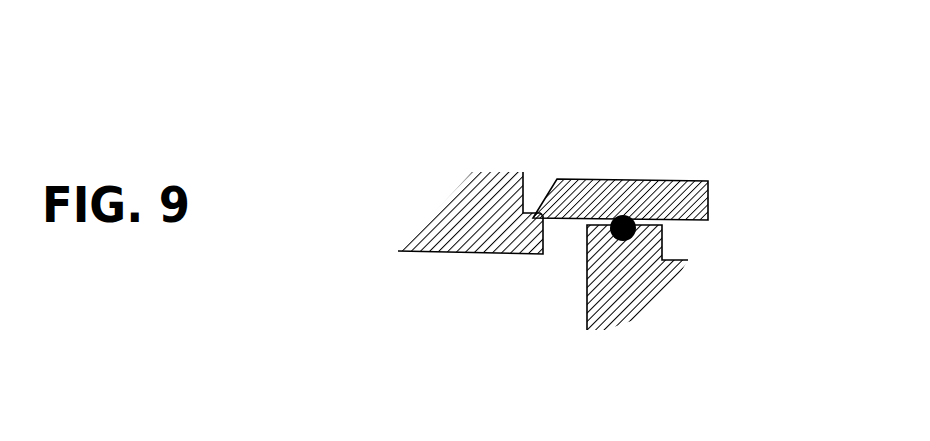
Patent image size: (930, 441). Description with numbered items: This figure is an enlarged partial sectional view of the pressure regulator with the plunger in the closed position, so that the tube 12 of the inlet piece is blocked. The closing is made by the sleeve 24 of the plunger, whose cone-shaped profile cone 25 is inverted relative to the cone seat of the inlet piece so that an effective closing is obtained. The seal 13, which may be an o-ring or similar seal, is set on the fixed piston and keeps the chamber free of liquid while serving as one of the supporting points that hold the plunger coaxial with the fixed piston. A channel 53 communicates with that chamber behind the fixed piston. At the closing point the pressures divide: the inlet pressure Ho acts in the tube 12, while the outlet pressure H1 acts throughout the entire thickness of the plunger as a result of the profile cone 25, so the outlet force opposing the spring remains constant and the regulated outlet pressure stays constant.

The profile cone 25 is at (465, 141).
The sleeve 24 is at (624, 136).
The tube 12 is at (653, 319).
The seal 13 is at (707, 156).
The channel 53 is at (751, 331).
The outlet pressure H1 is at (578, 103).
The inlet pressure Ho is at (447, 319).